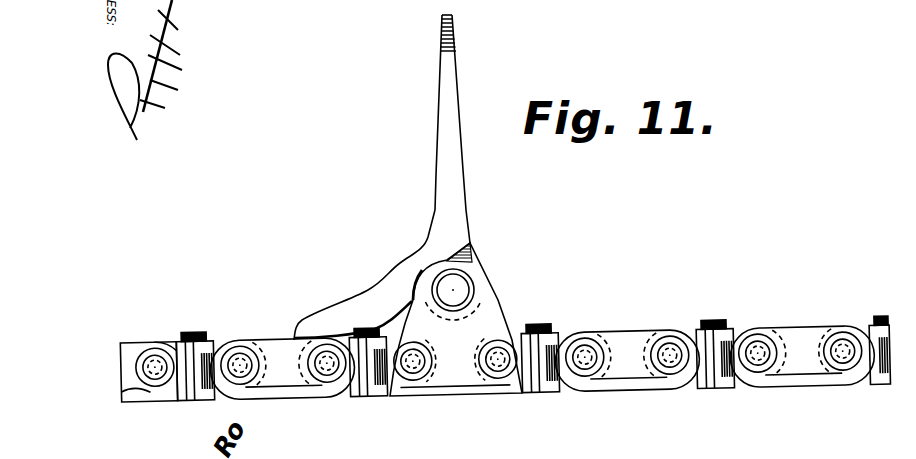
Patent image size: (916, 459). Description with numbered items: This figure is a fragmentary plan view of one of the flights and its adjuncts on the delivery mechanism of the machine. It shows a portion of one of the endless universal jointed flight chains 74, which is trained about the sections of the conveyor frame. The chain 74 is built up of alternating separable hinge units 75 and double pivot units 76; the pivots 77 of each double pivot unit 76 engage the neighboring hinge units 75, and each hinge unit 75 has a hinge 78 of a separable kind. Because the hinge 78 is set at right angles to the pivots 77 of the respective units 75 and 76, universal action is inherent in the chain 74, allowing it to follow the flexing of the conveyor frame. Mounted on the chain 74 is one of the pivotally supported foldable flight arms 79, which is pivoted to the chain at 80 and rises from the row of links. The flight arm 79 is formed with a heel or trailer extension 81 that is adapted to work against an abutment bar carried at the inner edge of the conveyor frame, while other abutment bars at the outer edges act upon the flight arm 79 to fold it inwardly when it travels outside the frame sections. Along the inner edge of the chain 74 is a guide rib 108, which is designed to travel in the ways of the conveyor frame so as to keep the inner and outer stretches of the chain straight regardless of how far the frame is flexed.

The flight chain 74 is at (778, 323).
The separable hinge unit 75 is at (205, 402).
The double pivot unit 76 is at (277, 346).
The pivot 77 is at (156, 372).
The hinge 78 is at (195, 332).
The flight arm 79 is at (455, 88).
The pivot 80 is at (460, 288).
The heel or trailer extension 81 is at (357, 303).
The guide rib 108 is at (805, 378).